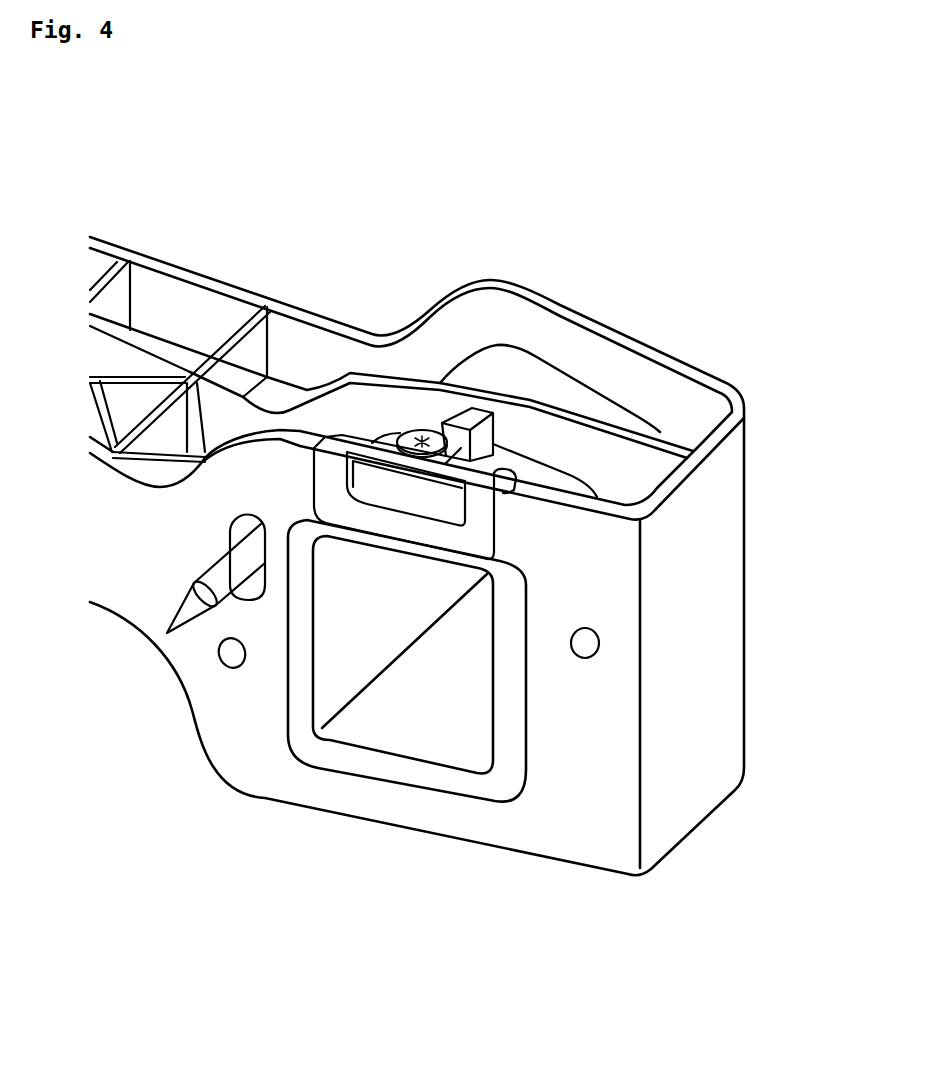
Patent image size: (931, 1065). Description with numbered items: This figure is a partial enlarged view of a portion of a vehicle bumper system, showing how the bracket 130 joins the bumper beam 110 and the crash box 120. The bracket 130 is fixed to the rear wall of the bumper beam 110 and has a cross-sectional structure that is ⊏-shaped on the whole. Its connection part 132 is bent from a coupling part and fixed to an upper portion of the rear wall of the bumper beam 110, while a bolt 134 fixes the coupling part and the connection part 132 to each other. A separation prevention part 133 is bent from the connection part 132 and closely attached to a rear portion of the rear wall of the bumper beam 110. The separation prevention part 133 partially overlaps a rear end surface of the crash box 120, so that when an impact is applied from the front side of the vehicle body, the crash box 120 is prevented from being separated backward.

The bumper beam 110 is at (736, 658).
The crash box 120 is at (420, 728).
The bracket 130 is at (538, 200).
The connection part 132 is at (335, 442).
The separation prevention part 133 is at (480, 505).
The bolt 134 is at (418, 432).